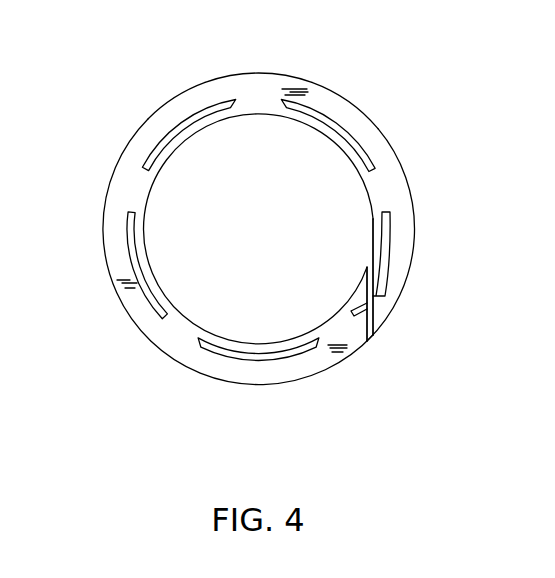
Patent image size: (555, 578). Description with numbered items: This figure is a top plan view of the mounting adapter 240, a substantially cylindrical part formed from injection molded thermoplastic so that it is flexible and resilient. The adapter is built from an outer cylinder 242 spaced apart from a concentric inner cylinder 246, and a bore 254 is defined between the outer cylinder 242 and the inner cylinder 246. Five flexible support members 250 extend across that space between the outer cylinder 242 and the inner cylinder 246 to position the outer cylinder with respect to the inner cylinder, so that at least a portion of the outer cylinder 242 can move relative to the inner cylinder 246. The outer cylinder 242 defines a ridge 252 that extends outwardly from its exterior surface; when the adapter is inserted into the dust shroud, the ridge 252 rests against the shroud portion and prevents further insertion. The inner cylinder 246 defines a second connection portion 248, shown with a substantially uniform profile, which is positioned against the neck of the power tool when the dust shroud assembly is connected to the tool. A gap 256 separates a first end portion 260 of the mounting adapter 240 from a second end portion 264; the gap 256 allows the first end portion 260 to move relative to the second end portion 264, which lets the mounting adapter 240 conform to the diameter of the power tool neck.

The mounting adapter 240 is at (468, 218).
The outer cylinder 242 is at (178, 110).
The inner cylinder 246 is at (213, 120).
The second connection portion 248 is at (310, 131).
The flexible support members 250 is at (262, 98).
The ridge 252 is at (371, 117).
The bore 254 is at (127, 233).
The gap 256 is at (371, 351).
The first end portion 260 is at (362, 330).
The second end portion 264 is at (392, 297).